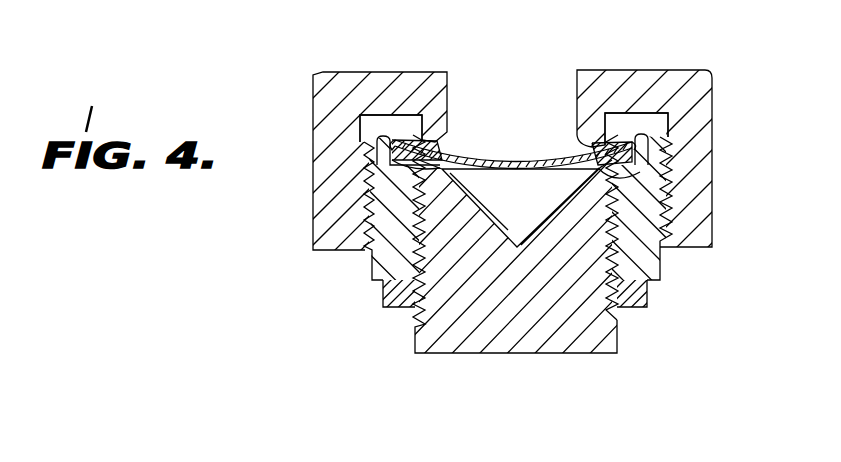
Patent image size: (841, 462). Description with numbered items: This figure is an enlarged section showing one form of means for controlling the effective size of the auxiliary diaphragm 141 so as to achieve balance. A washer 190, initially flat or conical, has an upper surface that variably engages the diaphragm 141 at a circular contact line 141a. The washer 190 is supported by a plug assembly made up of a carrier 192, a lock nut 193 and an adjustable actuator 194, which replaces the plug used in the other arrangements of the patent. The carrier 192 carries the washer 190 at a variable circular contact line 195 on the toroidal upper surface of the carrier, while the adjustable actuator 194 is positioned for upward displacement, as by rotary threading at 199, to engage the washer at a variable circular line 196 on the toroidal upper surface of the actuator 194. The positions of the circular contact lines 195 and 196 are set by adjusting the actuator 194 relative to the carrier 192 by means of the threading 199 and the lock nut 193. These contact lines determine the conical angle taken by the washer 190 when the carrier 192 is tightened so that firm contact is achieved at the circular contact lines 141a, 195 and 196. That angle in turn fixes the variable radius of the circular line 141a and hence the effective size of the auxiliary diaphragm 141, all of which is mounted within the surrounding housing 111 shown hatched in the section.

The housing 111 is at (328, 90).
The washer 190 is at (403, 137).
The auxiliary diaphragm 141 is at (545, 157).
The circular contact line 141a is at (434, 142).
The variable circular contact line 195 is at (613, 166).
The variable circular line 196 is at (622, 192).
The carrier 192 is at (660, 252).
The lock nut 193 is at (636, 307).
The adjustable actuator 194 is at (445, 336).
The threading 199 is at (413, 213).